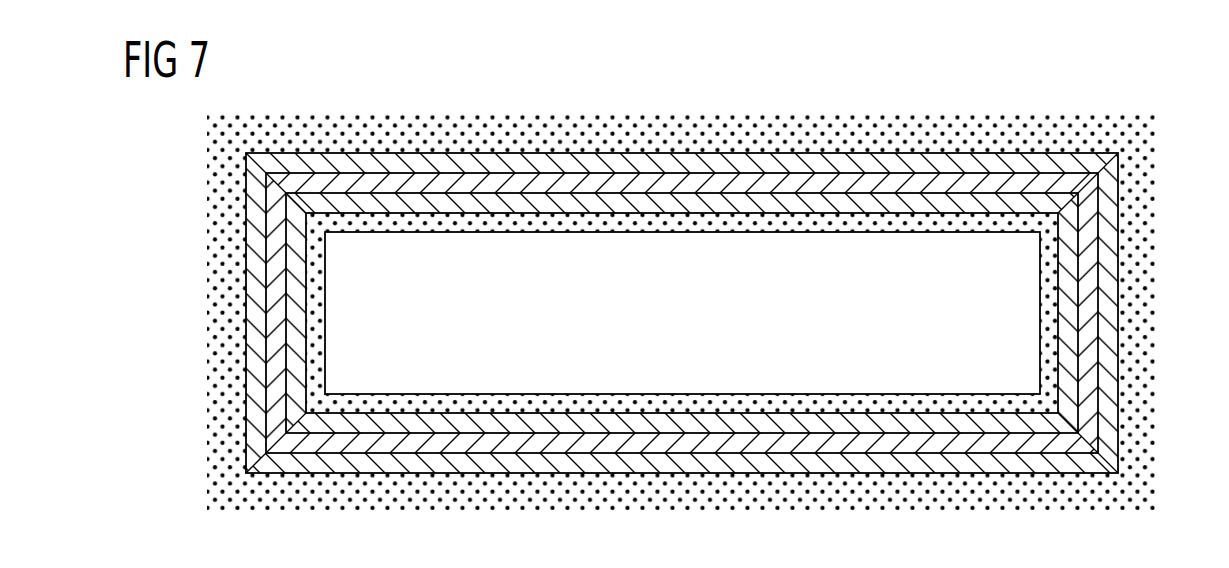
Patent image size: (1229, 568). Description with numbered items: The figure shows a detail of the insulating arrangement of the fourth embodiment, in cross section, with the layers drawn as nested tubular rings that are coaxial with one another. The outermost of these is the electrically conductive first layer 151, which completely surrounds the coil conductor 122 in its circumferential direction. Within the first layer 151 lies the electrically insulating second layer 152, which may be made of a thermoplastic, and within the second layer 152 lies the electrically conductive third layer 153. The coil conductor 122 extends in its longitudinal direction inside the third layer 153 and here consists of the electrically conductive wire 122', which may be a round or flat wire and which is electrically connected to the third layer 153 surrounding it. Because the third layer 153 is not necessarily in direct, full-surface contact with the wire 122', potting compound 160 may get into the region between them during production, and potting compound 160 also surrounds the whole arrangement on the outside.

The coil conductor 122 is at (711, 274).
The electrically conductive wire 122' is at (682, 219).
The first layer 151 is at (682, 259).
The second layer 152 is at (682, 313).
The third layer 153 is at (682, 313).
The potting compound 160 is at (682, 229).